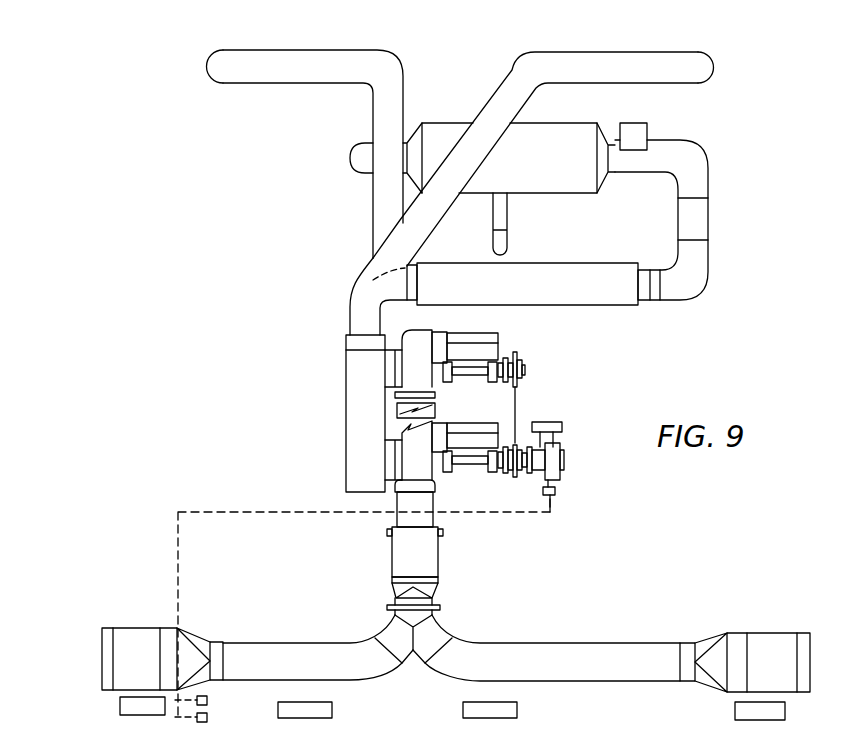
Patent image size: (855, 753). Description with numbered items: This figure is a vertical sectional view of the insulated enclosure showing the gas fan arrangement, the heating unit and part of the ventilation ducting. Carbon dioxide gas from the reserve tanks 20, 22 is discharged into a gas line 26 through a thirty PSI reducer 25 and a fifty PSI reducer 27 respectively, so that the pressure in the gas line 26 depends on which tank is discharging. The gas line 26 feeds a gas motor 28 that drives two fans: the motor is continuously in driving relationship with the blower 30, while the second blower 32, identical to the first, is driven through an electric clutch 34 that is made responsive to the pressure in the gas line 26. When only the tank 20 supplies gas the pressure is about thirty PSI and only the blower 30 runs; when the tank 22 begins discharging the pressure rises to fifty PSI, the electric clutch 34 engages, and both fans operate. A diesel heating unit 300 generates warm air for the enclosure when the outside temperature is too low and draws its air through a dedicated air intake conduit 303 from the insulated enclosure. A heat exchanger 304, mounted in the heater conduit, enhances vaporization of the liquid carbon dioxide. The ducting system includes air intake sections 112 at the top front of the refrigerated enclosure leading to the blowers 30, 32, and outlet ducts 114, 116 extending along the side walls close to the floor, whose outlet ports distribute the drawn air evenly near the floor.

The air intake sections 112 is at (258, 47).
The diesel heating unit 300 is at (574, 130).
The air intake conduit 303 is at (352, 150).
The heat exchanger 304 is at (607, 263).
The second blower 32 is at (427, 336).
The electric clutch 34 is at (523, 357).
The blower 30 is at (433, 420).
The gas motor 28 is at (563, 463).
The gas line 26 is at (364, 596).
The outlet duct 114 is at (102, 673).
The outlet duct 116 is at (810, 675).
The reserve tank 22 is at (452, 709).
The reserve tank 20 is at (397, 711).
The 50 PSI reducer 27 is at (207, 700).
The 30 PSI reducer 25 is at (207, 717).